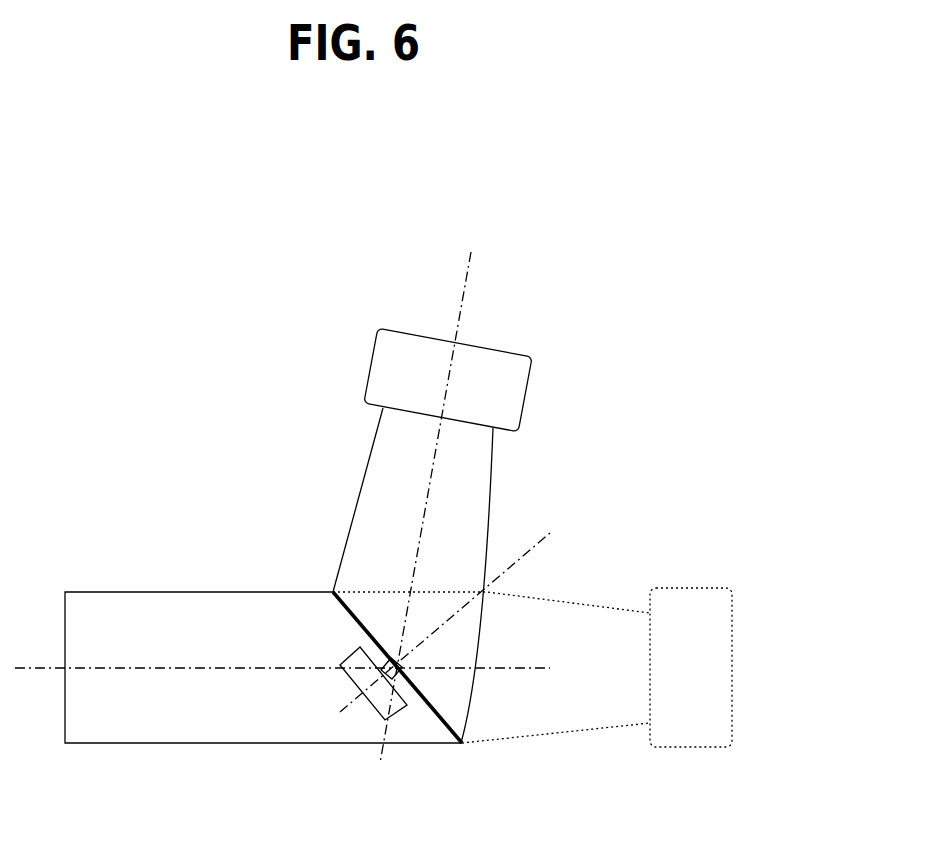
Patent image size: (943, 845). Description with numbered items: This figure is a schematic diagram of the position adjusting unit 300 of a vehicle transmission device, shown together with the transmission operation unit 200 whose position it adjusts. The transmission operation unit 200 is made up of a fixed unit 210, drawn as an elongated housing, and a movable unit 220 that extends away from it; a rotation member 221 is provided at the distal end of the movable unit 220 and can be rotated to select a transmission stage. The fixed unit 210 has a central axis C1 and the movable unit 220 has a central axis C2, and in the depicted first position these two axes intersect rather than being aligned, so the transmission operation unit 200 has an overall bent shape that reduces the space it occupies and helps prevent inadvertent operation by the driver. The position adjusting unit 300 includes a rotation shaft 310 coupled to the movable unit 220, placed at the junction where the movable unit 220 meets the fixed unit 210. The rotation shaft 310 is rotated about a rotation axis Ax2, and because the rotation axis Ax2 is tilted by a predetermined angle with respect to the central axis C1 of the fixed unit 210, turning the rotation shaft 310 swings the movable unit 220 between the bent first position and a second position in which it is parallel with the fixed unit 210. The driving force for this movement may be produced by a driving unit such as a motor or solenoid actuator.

The transmission operation unit 200 is at (316, 518).
The fixed unit 210 is at (184, 592).
The movable unit 220 is at (363, 522).
The rotation member 221 is at (507, 353).
The position adjusting unit 300 is at (368, 708).
The rotation shaft 310 is at (430, 725).
The central axis of the fixed unit C1 is at (301, 667).
The central axis of the movable unit C2 is at (434, 490).
The rotation axis Ax2 is at (466, 609).